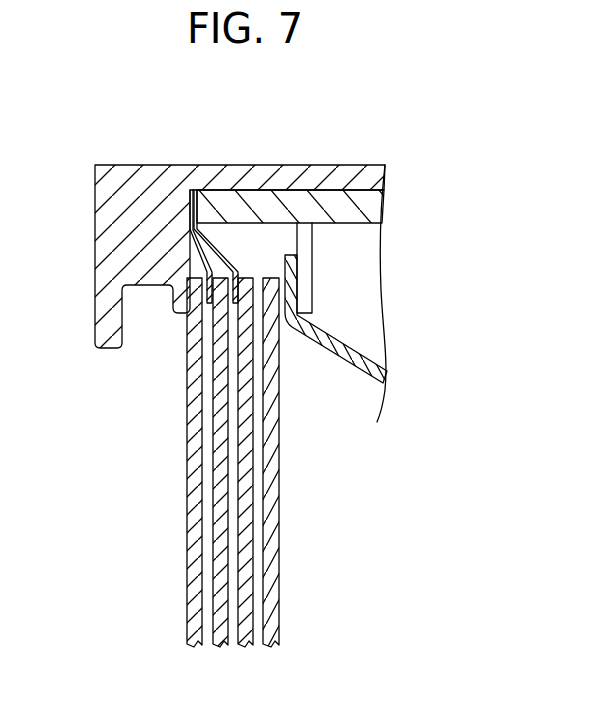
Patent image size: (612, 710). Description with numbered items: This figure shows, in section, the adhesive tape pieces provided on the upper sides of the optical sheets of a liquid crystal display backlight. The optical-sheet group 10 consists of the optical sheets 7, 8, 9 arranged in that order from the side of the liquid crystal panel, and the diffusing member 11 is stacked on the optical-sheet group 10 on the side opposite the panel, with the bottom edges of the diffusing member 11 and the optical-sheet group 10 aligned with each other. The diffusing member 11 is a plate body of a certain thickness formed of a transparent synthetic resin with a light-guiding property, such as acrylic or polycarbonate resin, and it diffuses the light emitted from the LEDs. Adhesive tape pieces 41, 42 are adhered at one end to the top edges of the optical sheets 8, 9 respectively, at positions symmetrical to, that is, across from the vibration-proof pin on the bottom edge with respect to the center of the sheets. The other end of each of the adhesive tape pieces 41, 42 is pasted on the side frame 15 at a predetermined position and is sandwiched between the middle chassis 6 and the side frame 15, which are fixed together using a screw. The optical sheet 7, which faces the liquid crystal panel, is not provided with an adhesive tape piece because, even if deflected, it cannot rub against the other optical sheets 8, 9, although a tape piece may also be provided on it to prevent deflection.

The middle chassis 6 is at (133, 183).
The optical sheet 7 is at (187, 433).
The optical sheet 8 is at (213, 483).
The optical sheet 9 is at (243, 536).
The optical-sheet group 10 is at (149, 462).
The diffusing member 11 is at (280, 523).
The side frame 15 is at (363, 205).
The adhesive tape piece 41 is at (191, 230).
The adhesive tape piece 42 is at (231, 256).